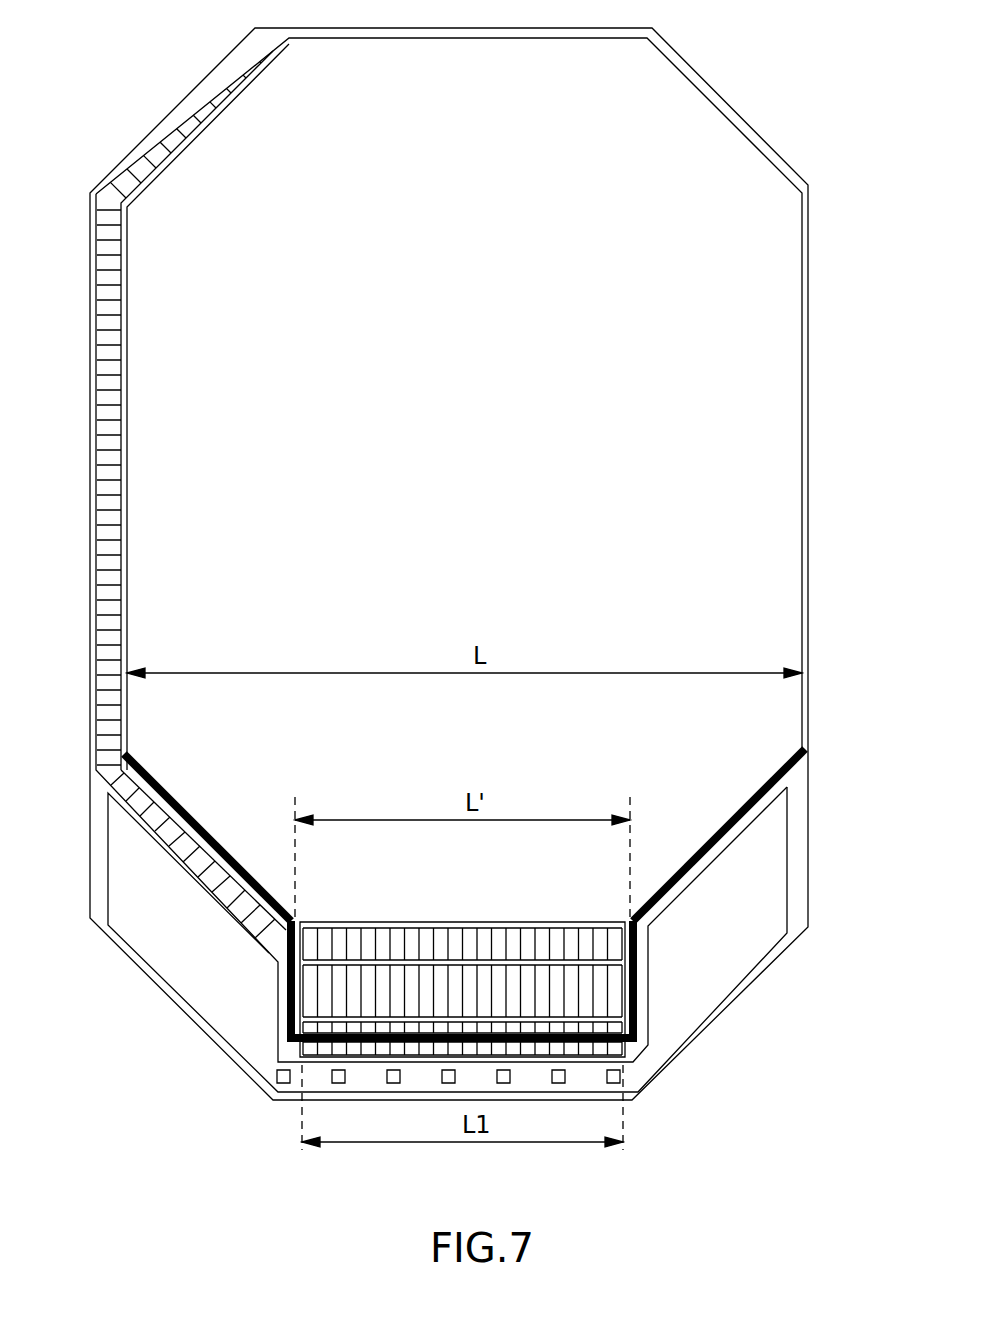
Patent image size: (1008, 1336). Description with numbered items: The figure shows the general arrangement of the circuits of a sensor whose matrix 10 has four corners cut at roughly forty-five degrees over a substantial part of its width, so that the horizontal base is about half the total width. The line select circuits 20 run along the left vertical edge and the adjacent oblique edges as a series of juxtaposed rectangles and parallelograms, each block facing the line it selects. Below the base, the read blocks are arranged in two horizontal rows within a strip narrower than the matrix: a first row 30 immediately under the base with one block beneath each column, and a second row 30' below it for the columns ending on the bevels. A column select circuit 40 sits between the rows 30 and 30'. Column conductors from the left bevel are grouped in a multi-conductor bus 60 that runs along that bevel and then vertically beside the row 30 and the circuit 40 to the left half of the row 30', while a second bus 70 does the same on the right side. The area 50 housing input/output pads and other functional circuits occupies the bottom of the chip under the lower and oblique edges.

The matrix 10 is at (765, 372).
The line select circuits 20 is at (108, 680).
The first row of read blocks 30 is at (462, 961).
The second row of read blocks 30' is at (499, 1079).
The column select circuit 40 is at (643, 995).
The area for input/output pads and functional circuits 50 is at (755, 898).
The multi-conductor bus 60 is at (203, 826).
The multi-conductor bus 70 is at (714, 832).